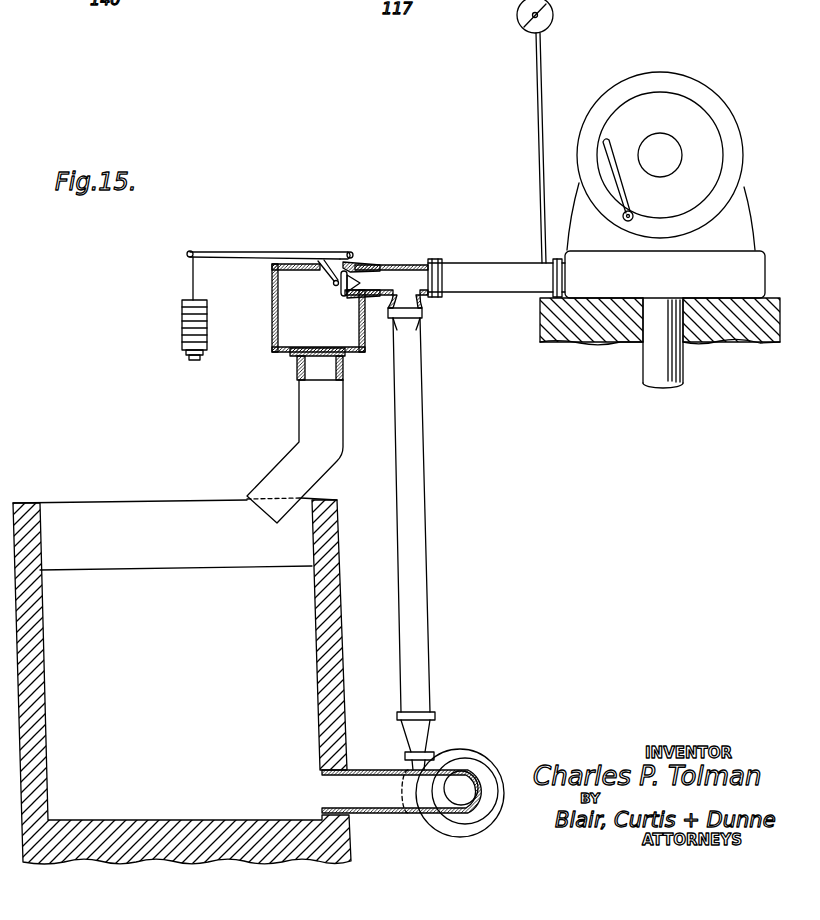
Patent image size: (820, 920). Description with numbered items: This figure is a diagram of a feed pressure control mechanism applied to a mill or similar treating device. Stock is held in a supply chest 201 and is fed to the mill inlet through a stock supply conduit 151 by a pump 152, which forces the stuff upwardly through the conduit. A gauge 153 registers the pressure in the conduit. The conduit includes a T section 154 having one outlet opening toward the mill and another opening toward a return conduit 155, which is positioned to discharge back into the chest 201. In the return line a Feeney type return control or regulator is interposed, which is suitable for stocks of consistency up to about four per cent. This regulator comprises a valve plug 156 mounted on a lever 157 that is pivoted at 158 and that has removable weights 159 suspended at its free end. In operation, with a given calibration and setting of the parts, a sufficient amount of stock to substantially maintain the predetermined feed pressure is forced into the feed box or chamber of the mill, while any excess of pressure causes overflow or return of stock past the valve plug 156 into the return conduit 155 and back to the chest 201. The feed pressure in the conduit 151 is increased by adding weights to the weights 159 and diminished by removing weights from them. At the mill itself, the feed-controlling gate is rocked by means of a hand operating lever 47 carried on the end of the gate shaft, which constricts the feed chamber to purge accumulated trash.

The supply chest 201 is at (20, 548).
The pump 152 is at (473, 755).
The stock supply conduit 151 is at (413, 522).
The T section 154 is at (394, 266).
The valve plug 156 is at (338, 290).
The lever 157 is at (264, 253).
The pivot 158 is at (352, 252).
The removable weights 159 is at (192, 328).
The return conduit 155 is at (297, 457).
The gauge 153 is at (517, 15).
The operating lever 47 is at (612, 155).